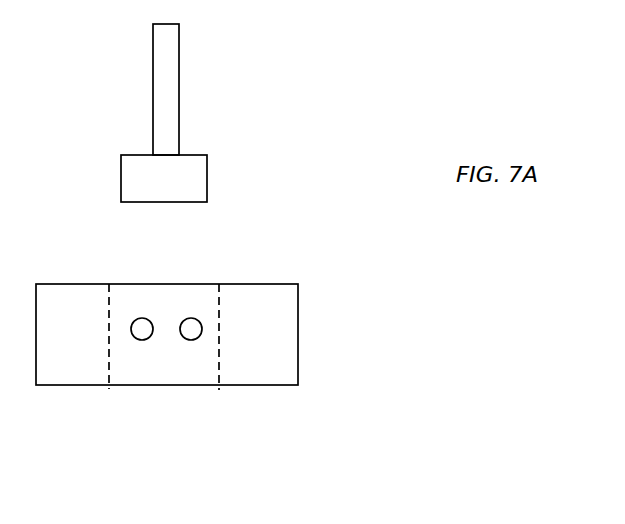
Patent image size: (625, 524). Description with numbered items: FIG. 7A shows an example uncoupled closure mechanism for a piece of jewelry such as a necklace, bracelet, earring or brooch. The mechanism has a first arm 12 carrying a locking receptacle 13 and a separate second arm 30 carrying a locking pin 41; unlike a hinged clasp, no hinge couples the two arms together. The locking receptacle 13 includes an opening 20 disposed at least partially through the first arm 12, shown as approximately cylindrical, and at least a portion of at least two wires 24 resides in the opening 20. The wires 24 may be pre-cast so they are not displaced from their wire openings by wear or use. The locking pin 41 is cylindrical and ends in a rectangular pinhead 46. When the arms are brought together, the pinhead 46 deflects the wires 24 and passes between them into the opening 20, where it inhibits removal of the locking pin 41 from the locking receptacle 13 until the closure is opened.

The second arm 30 is at (288, 58).
The locking pin 41 is at (165, 106).
The pinhead 46 is at (183, 181).
The locking receptacle 13 is at (125, 274).
The first arm 12 is at (272, 364).
The opening 20 is at (123, 367).
The wires 24 is at (142, 340).